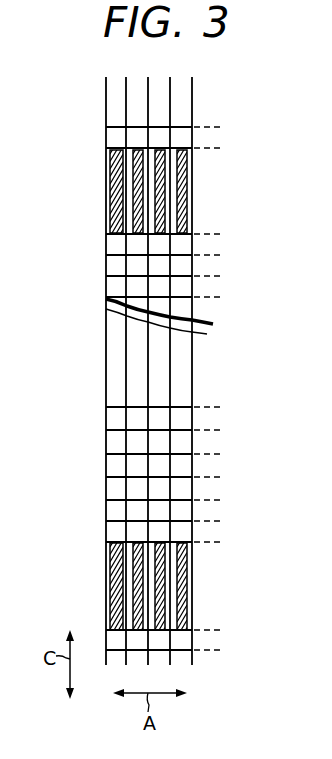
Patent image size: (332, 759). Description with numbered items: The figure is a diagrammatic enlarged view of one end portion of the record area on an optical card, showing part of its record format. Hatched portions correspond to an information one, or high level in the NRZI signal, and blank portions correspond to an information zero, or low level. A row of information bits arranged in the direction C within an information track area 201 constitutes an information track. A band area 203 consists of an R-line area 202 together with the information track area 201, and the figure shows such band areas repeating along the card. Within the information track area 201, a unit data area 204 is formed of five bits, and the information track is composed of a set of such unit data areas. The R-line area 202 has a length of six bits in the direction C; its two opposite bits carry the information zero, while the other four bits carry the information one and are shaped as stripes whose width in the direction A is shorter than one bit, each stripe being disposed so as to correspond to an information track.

The information track area 201 is at (101, 75).
The R-line area 202 is at (101, 128).
The band area 203 is at (247, 655).
The unit data area 204 is at (96, 408).